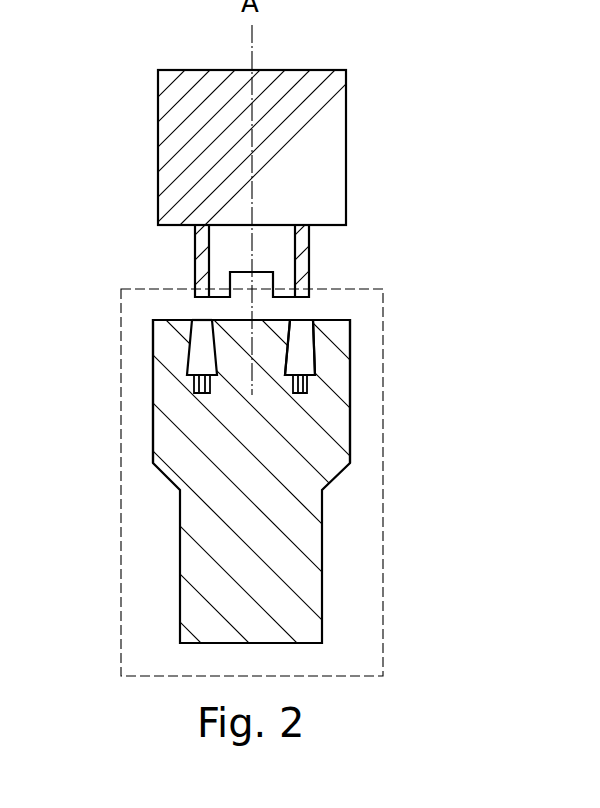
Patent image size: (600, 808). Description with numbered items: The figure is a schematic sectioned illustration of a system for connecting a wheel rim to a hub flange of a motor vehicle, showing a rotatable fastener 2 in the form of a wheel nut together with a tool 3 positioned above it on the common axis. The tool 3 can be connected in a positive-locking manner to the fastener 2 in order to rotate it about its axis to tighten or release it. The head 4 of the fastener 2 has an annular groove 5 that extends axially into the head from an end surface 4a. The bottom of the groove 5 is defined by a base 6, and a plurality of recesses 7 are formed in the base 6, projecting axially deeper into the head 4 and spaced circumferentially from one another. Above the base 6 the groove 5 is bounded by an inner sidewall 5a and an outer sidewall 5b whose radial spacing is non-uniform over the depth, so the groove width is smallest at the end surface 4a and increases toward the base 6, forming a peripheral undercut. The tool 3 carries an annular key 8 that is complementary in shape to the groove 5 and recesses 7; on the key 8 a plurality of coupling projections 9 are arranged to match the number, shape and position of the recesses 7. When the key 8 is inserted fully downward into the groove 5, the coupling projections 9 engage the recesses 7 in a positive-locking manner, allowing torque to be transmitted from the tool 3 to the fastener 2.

The rotatable fastener 2 is at (325, 522).
The tool 3 is at (352, 150).
The head 4 is at (345, 356).
The end surface 4a is at (322, 320).
The annular groove 5 is at (183, 357).
The inner sidewall 5a is at (290, 347).
The outer sidewall 5b is at (198, 324).
The base 6 is at (192, 385).
The recesses 7 is at (305, 383).
The annular key 8 is at (200, 268).
The coupling projections 9 is at (284, 280).